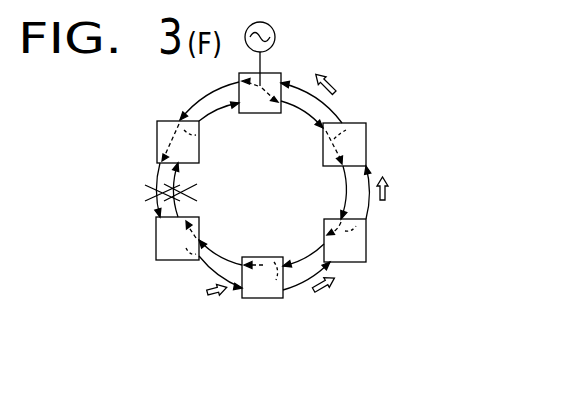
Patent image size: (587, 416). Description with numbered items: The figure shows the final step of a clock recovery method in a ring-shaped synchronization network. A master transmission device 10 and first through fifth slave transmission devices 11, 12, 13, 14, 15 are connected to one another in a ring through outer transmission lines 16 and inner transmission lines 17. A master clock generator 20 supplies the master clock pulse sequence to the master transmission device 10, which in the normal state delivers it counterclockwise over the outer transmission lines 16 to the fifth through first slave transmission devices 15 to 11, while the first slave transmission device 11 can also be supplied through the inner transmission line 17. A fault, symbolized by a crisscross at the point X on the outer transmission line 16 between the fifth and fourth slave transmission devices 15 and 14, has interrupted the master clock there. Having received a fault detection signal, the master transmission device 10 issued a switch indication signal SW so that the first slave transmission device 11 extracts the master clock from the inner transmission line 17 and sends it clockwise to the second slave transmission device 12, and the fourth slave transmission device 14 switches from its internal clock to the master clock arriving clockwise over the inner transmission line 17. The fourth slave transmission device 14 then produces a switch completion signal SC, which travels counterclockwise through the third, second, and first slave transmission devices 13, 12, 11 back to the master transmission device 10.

The master transmission device 10 is at (284, 74).
The first slave transmission device 11 is at (366, 127).
The second slave transmission device 12 is at (366, 234).
The third slave transmission device 13 is at (275, 257).
The fourth slave transmission device 14 is at (156, 235).
The fifth slave transmission device 15 is at (199, 140).
The outer transmission lines 16 is at (203, 268).
The inner transmission lines 17 is at (305, 120).
The master clock generator 20 is at (275, 32).
The fault point X is at (153, 196).
The switch indication signal SW is at (223, 249).
The switch completion signal SC is at (216, 298).